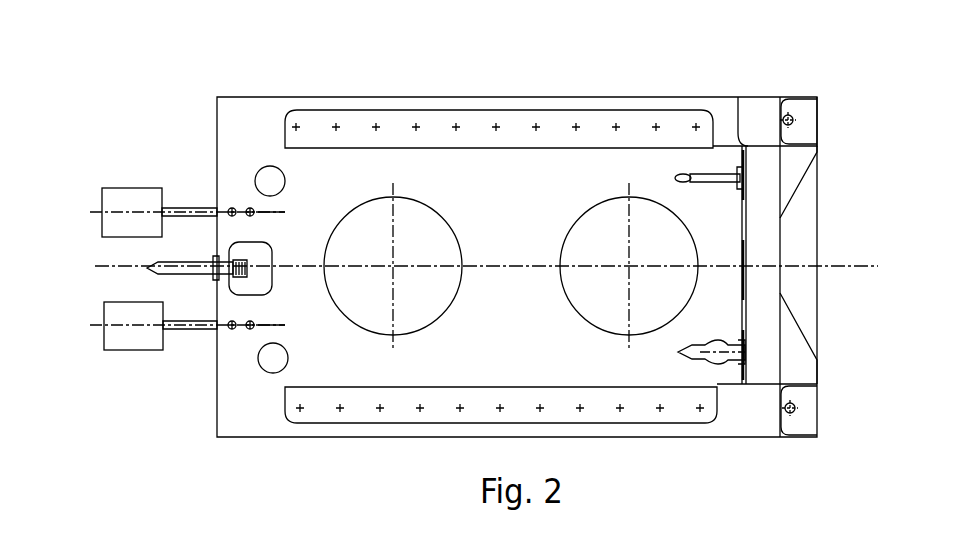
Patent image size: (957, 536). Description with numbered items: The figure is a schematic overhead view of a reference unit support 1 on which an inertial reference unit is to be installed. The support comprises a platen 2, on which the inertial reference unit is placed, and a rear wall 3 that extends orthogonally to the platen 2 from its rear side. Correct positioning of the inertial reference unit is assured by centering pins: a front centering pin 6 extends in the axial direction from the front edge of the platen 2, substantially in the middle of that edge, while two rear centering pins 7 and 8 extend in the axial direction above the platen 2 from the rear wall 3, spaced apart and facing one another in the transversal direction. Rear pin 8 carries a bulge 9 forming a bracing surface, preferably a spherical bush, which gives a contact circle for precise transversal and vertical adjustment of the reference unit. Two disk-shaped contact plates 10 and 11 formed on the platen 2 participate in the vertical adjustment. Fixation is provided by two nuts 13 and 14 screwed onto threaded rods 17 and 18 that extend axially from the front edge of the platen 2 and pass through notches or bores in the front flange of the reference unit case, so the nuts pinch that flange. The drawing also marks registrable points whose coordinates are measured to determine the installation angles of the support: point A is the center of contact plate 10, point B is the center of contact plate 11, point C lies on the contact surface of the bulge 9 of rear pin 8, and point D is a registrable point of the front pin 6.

The reference unit support 1 is at (587, 62).
The platen 2 is at (222, 431).
The rear wall 3 is at (772, 236).
The front centering pin 6 is at (150, 272).
The rear centering pin 7 is at (708, 178).
The rear centering pin 8 is at (730, 363).
The bulge 9 is at (718, 342).
The contact plate 10 is at (265, 167).
The contact plate 11 is at (262, 366).
The nut 13 is at (126, 190).
The nut 14 is at (140, 352).
The threaded rod 17 is at (188, 208).
The threaded rod 18 is at (200, 334).
The point A is at (283, 179).
The point B is at (286, 356).
The point C is at (717, 335).
The point D is at (160, 276).